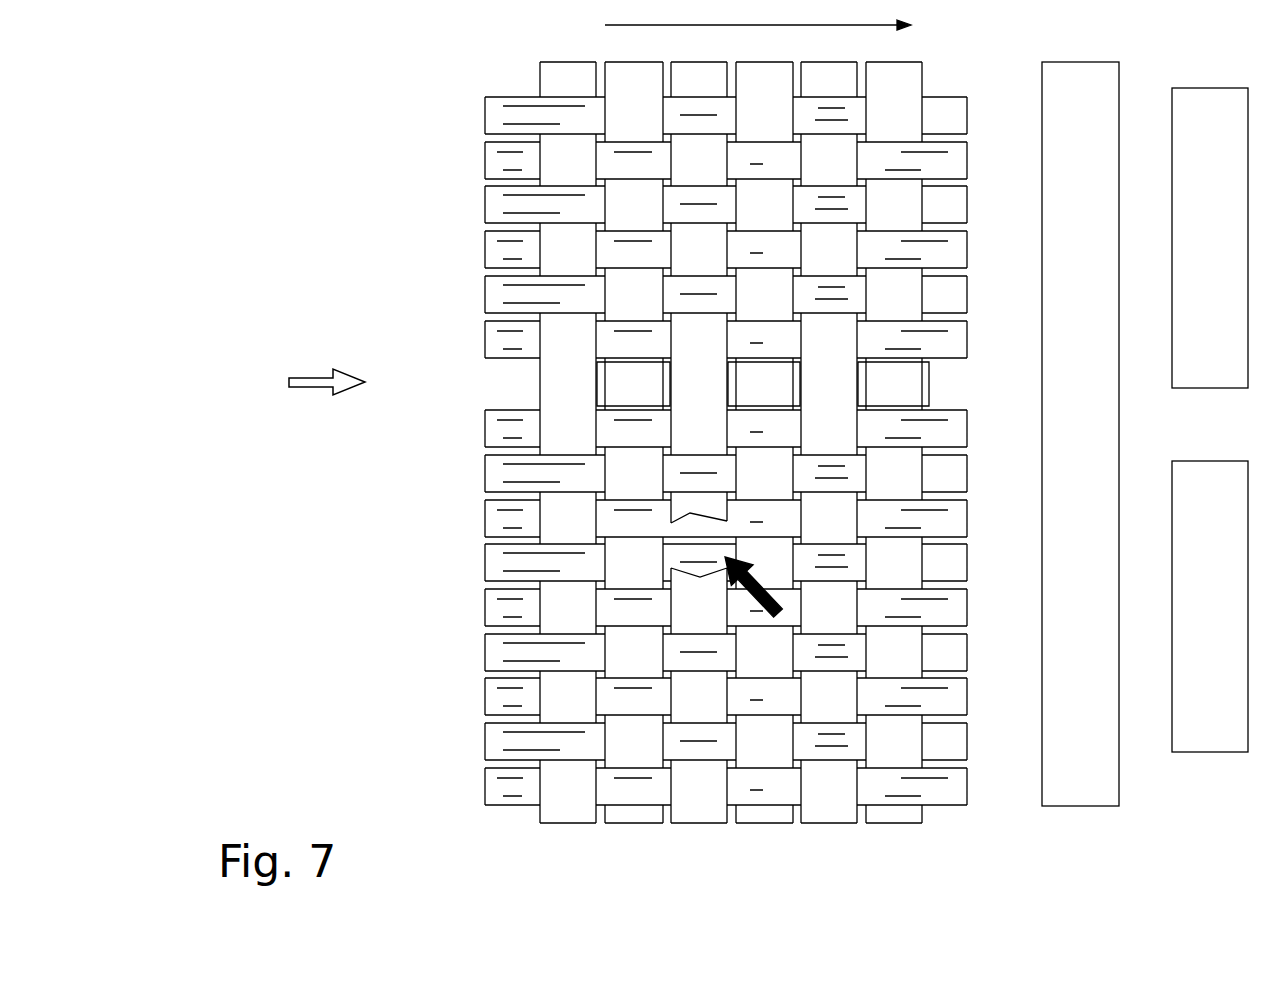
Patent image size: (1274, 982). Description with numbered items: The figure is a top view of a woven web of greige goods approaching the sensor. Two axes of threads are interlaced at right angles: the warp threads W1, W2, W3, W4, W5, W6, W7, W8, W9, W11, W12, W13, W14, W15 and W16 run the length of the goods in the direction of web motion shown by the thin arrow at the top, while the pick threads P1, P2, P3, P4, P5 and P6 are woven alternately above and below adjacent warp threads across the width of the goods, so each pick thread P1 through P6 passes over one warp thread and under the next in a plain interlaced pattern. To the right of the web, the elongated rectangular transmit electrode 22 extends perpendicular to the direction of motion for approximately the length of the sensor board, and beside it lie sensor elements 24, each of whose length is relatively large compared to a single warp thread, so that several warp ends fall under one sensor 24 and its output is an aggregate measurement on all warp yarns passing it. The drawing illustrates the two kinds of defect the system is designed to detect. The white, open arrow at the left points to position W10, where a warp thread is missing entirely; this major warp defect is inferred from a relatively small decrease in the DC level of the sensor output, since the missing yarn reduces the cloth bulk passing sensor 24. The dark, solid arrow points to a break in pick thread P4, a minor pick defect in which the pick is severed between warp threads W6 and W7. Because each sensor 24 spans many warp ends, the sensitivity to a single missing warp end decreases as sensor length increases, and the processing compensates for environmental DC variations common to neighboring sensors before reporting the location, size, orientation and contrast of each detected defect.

The transmit electrode 22 is at (1080, 434).
The sensor 24 is at (1210, 420).
The warp thread W1 is at (679, 786).
The warp thread W2 is at (679, 741).
The warp thread W3 is at (679, 696).
The warp thread W4 is at (679, 652).
The warp thread W5 is at (679, 607).
The warp thread W6 is at (679, 562).
The warp thread W7 is at (679, 518).
The warp thread W8 is at (679, 473).
The warp thread W9 is at (679, 428).
The missing warp thread position W10 is at (660, 384).
The warp thread W11 is at (679, 339).
The warp thread W12 is at (679, 294).
The warp thread W13 is at (679, 249).
The warp thread W14 is at (679, 204).
The warp thread W15 is at (679, 160).
The warp thread W16 is at (679, 115).
The pick thread P1 is at (894, 464).
The pick thread P2 is at (829, 464).
The pick thread P3 is at (764, 464).
The pick thread P4 is at (699, 464).
The pick thread P5 is at (634, 464).
The pick thread P6 is at (568, 464).